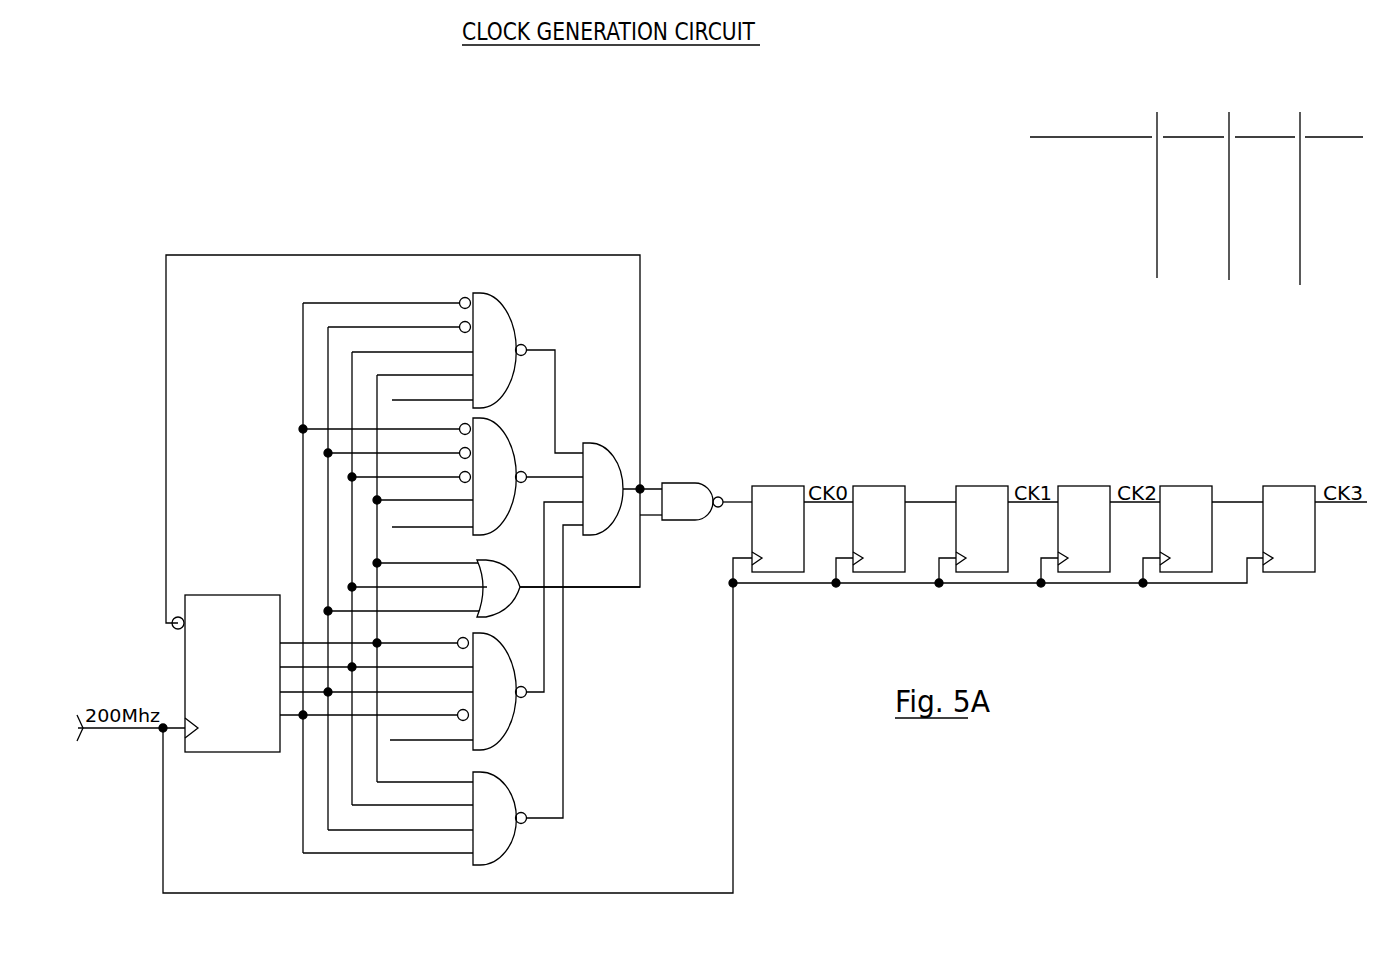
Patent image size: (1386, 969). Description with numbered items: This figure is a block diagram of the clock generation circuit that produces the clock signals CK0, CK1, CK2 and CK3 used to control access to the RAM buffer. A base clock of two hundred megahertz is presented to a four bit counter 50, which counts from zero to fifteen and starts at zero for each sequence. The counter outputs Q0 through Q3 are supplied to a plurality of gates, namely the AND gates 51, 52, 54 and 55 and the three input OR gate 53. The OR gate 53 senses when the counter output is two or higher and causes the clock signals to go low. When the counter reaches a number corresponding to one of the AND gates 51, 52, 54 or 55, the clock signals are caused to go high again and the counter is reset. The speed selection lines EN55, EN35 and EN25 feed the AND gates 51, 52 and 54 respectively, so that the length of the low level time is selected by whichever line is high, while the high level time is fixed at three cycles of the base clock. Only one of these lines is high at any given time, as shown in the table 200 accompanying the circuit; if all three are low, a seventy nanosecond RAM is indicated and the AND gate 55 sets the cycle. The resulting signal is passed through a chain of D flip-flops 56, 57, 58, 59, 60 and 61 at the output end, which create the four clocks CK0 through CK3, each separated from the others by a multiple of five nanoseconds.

The four bit counter 50 is at (245, 743).
The AND gate 51 is at (499, 325).
The AND gate 52 is at (503, 460).
The three input OR gate 53 is at (507, 570).
The AND gate 54 is at (500, 675).
The AND gate 55 is at (500, 803).
The D flip-flop 56 is at (777, 484).
The D flip-flop 57 is at (882, 484).
The D flip-flop 58 is at (985, 484).
The D flip-flop 59 is at (1087, 484).
The D flip-flop 60 is at (1189, 484).
The D flip-flop 61 is at (1290, 484).
The table 200 is at (1058, 199).